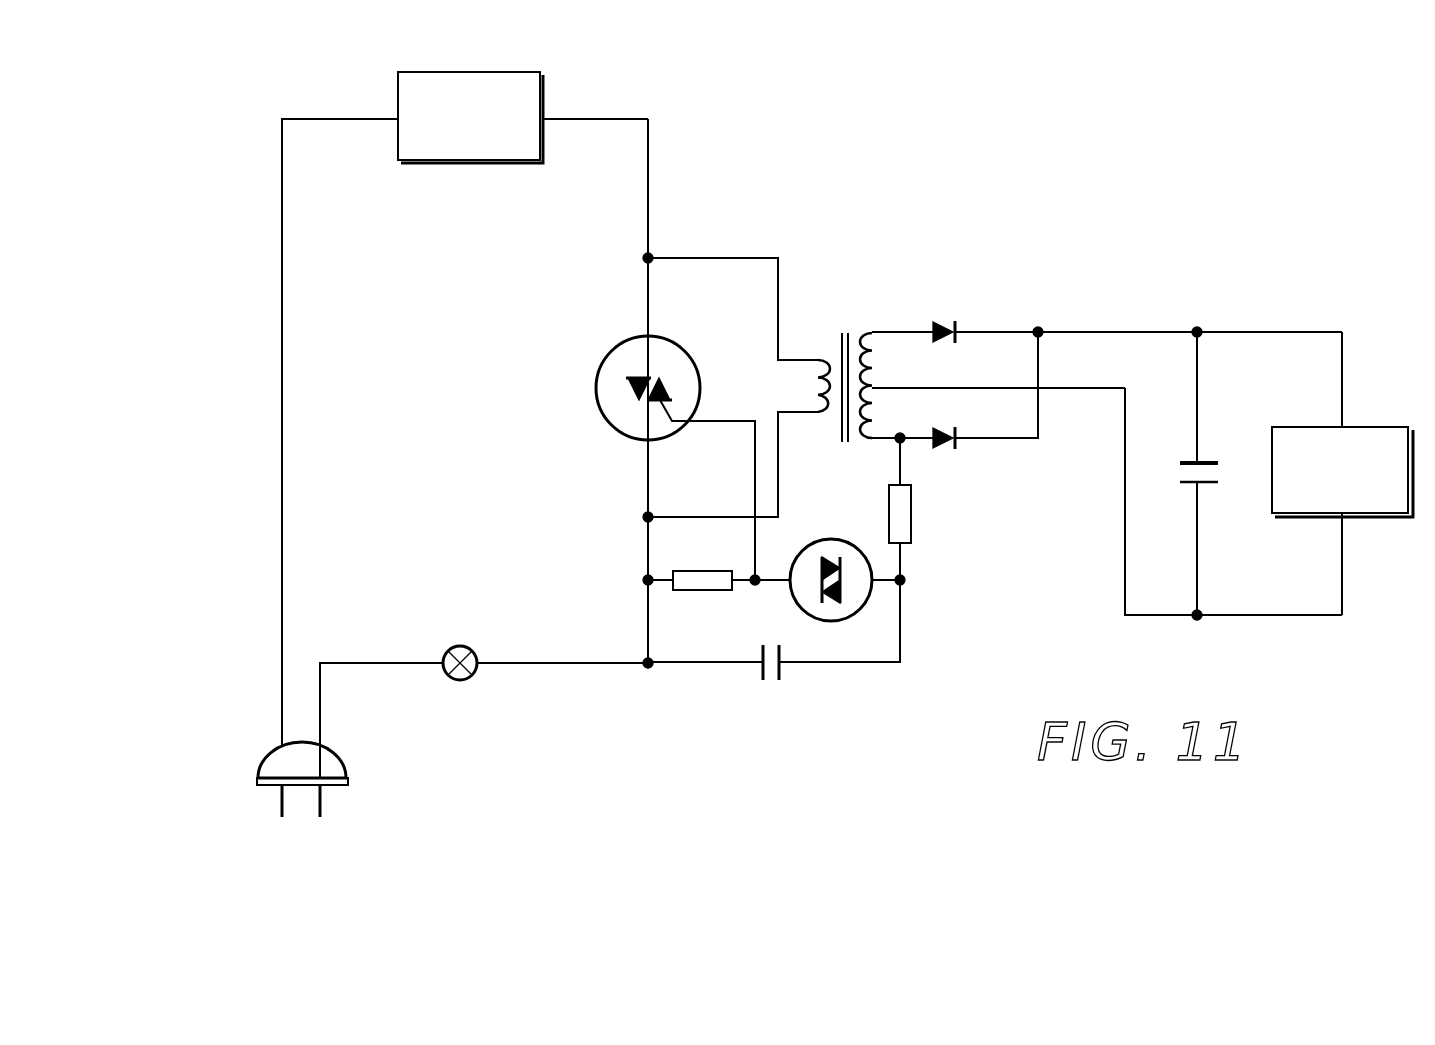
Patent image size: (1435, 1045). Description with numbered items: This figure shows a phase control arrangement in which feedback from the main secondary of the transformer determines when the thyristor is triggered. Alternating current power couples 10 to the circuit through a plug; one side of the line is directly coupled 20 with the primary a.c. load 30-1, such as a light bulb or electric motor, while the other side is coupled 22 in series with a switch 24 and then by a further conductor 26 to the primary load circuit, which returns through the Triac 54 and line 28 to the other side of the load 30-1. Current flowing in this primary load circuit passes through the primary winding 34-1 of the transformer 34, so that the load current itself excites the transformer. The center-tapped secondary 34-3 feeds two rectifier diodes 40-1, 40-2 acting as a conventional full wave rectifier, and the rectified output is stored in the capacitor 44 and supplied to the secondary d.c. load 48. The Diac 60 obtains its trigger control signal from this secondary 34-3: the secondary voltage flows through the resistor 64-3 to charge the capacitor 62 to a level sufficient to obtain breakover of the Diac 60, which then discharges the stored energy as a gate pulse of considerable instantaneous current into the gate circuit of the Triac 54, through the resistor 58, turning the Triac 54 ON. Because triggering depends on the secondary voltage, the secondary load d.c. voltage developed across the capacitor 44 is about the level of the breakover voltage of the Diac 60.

The alternating current power coupling 10 is at (258, 766).
The direct coupling to primary load 20 is at (282, 378).
The series coupling line 22 is at (352, 661).
The switch 24 is at (462, 645).
The conductor 26 is at (538, 660).
The line 28 is at (650, 228).
The primary a.c. load 30-1 is at (547, 88).
The transformer 34 is at (850, 326).
The primary winding 34-1 is at (800, 383).
The center-tapped transformer secondary 34-3 is at (882, 368).
The rectifier diode 40-1 is at (965, 322).
The rectifier diode 40-2 is at (962, 460).
The capacitor 44 is at (1177, 460).
The secondary d.c. load 48 is at (1396, 425).
The thyristor 54 is at (597, 406).
The resistor 58 is at (718, 568).
The Diac 60 is at (856, 613).
The capacitor 62 is at (760, 688).
The resistor 64-3 is at (914, 533).